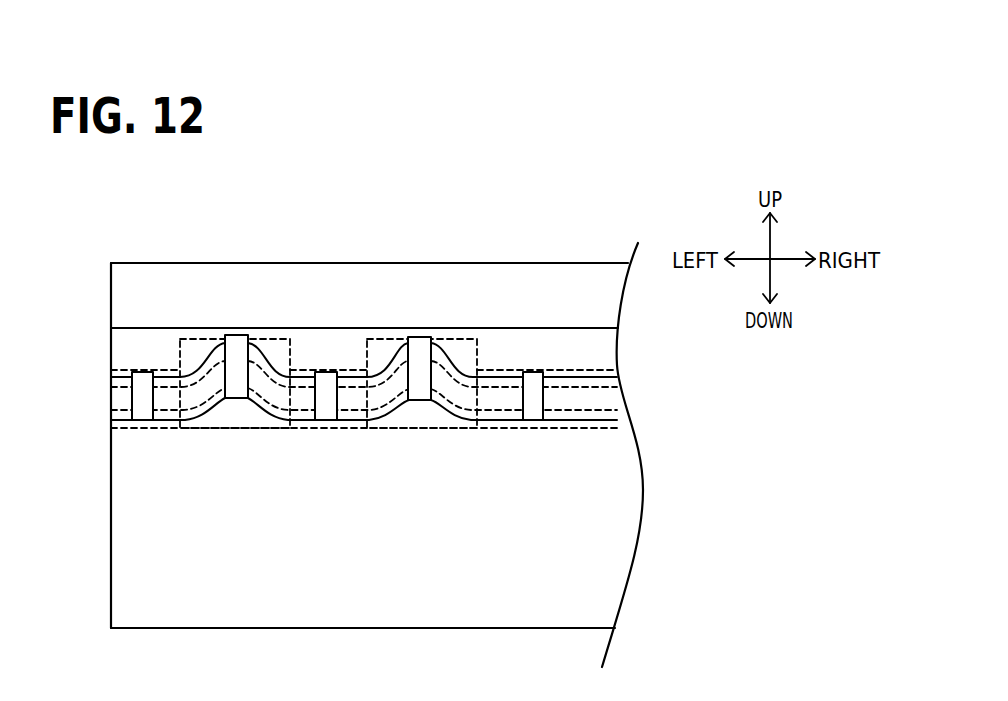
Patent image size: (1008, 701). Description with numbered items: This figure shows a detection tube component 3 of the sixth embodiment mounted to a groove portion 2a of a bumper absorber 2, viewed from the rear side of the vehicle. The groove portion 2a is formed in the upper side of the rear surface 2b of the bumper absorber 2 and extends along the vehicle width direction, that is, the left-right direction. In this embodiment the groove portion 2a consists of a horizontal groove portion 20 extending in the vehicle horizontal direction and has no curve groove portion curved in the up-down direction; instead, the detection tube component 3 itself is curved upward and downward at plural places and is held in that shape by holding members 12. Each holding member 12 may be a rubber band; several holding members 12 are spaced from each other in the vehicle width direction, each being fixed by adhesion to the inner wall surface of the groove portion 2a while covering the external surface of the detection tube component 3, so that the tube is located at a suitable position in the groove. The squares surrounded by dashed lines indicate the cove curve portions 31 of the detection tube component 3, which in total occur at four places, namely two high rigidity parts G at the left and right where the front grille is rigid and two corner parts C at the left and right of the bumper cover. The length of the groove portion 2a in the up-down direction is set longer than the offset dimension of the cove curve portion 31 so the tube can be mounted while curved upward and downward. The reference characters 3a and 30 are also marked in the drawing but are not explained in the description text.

The bumper absorber 2 is at (537, 263).
The groove portion 2a is at (415, 424).
The horizontal groove portion 20 is at (593, 418).
The rear surface 2b is at (607, 583).
The detection tube component 3 is at (342, 372).
The surface of conductive layer 3a is at (165, 392).
The holding member 12 is at (135, 372).
The recess region 30 is at (150, 430).
The cove curve portion 31 is at (270, 340).